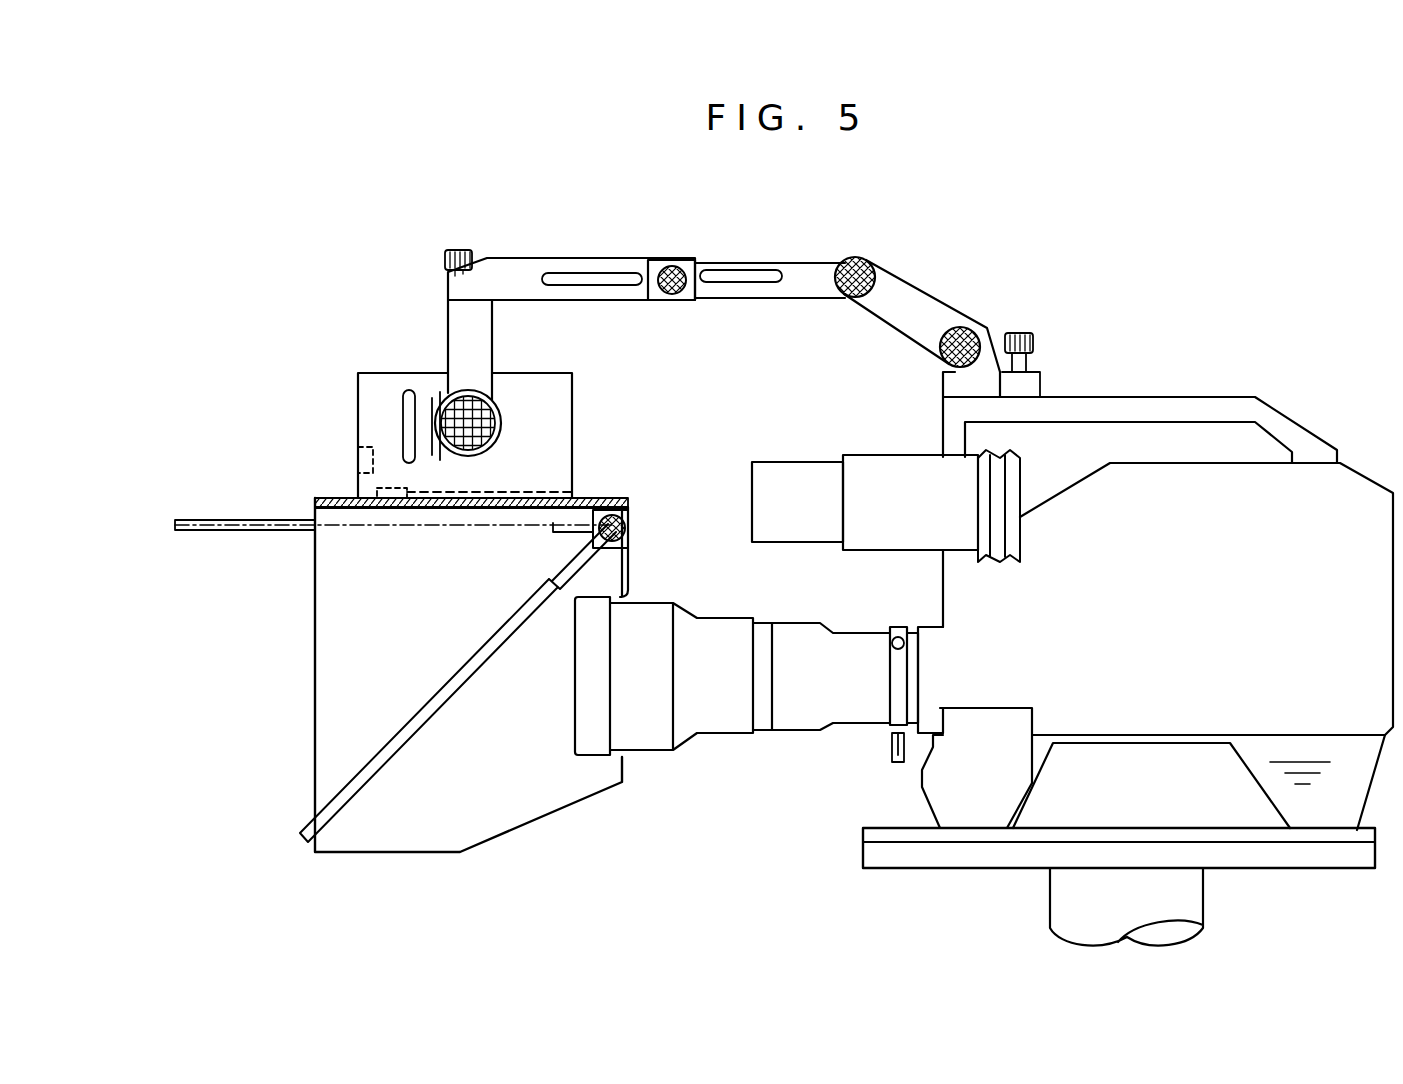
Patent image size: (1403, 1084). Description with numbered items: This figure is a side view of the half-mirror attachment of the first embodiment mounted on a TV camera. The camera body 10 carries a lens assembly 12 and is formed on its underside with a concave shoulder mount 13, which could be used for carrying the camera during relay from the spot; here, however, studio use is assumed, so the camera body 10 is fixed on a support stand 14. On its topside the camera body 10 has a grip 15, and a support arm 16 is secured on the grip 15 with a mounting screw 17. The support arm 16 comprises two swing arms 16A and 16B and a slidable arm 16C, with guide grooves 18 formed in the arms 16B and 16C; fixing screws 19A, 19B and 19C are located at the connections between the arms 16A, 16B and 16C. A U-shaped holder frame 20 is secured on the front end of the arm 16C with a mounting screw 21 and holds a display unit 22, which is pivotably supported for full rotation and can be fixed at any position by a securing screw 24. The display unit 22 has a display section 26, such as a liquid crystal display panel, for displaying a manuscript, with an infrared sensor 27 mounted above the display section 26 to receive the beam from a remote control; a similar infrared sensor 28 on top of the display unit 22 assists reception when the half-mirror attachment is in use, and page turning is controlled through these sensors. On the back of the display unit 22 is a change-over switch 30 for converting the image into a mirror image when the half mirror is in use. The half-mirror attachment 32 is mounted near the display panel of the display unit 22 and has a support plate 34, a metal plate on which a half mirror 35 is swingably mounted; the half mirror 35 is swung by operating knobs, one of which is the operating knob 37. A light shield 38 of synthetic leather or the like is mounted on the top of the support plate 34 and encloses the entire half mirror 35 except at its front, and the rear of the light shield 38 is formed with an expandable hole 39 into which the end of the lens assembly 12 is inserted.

The camera body 10 is at (1150, 618).
The lens assembly 12 is at (735, 625).
The concave shoulder mount 13 is at (1165, 745).
The support stand 14 is at (970, 870).
The grip 15 is at (1115, 397).
The support arm 16 is at (848, 242).
The swing arm 16A is at (915, 293).
The swing arm 16B is at (800, 262).
The slidable arm 16C is at (538, 260).
The mounting screw 17 is at (1030, 336).
The guide grooves 18 is at (605, 280).
The fixing screw 19A is at (940, 361).
The fixing screw 19B is at (845, 297).
The fixing screw 19C is at (677, 266).
The U-shaped holder frame 20 is at (447, 318).
The mounting screw 21 is at (445, 260).
The display unit 22 is at (572, 388).
The securing screw 24 is at (452, 420).
The display section 26 is at (540, 495).
The infrared sensor 27 is at (375, 490).
The infrared sensor 28 is at (368, 455).
The change-over switch 30 is at (532, 373).
The half-mirror attachment 32 is at (293, 742).
The support plate 34 is at (353, 508).
The half mirror 35 is at (205, 530).
The operating knob 37 is at (630, 527).
The light shield 38 is at (510, 830).
The hole 39 is at (622, 595).